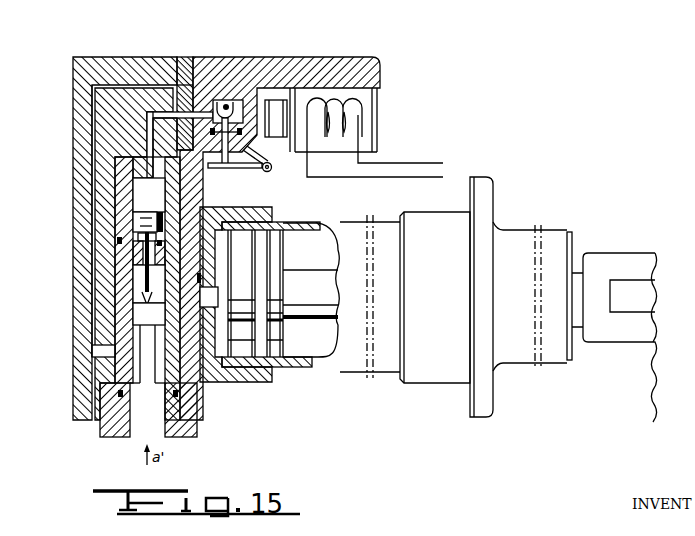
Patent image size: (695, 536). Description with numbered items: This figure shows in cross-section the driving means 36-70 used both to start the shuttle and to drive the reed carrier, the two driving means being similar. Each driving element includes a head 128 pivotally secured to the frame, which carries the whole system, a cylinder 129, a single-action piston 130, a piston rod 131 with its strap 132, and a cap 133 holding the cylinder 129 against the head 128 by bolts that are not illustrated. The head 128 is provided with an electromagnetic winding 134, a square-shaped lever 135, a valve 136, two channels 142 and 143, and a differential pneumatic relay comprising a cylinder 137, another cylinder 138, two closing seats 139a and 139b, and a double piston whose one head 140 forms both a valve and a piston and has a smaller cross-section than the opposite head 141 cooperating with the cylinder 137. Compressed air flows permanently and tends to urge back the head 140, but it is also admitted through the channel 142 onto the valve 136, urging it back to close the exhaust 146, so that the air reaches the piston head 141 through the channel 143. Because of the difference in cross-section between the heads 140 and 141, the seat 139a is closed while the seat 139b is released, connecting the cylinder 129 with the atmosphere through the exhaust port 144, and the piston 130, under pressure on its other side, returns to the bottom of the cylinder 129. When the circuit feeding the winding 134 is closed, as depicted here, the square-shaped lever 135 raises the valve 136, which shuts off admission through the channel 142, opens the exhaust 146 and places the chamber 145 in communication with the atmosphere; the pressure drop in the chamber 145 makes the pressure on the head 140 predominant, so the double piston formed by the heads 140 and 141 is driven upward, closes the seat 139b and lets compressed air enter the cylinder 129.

The head 128 is at (70, 101).
The cylinder 129 is at (341, 296).
The single-action piston 130 is at (250, 304).
The piston rod 131 is at (317, 304).
The strap 132 is at (650, 272).
The cap 133 is at (449, 307).
The electromagnetic winding 134 is at (362, 116).
The square-shaped lever 135 is at (230, 170).
The valve 136 is at (227, 104).
The cylinder 137 is at (125, 190).
The cylinder 138 is at (138, 278).
The closing seat 139a is at (118, 331).
The closing seat 139b is at (133, 249).
The piston head 140 is at (158, 322).
The piston head 141 is at (143, 222).
The channel 142 is at (140, 59).
The channel 143 is at (148, 147).
The exhaust port 144 is at (147, 234).
The chamber 145 is at (160, 199).
The exhaust 146 is at (212, 58).
The driving means 36-70 is at (481, 158).